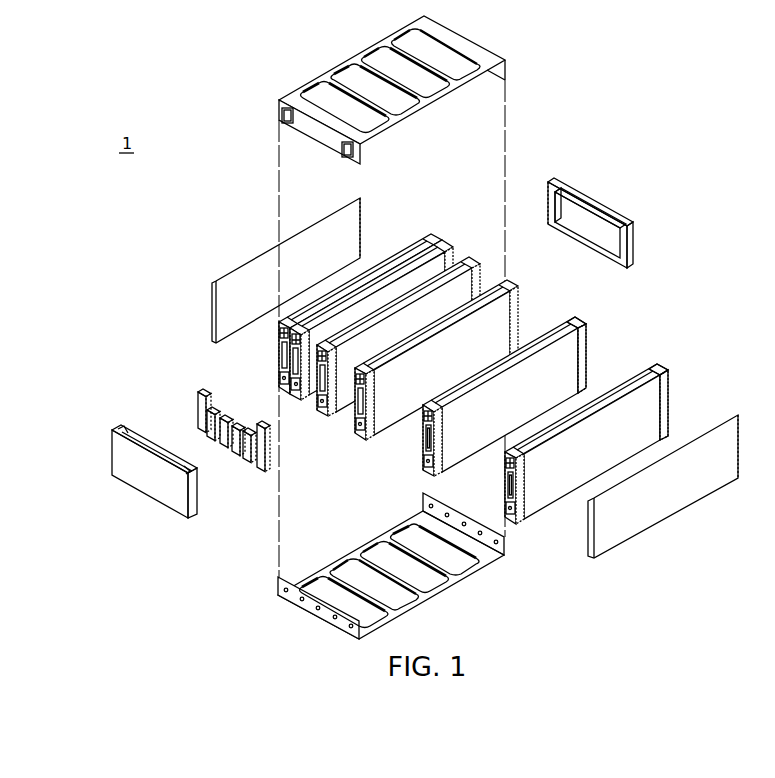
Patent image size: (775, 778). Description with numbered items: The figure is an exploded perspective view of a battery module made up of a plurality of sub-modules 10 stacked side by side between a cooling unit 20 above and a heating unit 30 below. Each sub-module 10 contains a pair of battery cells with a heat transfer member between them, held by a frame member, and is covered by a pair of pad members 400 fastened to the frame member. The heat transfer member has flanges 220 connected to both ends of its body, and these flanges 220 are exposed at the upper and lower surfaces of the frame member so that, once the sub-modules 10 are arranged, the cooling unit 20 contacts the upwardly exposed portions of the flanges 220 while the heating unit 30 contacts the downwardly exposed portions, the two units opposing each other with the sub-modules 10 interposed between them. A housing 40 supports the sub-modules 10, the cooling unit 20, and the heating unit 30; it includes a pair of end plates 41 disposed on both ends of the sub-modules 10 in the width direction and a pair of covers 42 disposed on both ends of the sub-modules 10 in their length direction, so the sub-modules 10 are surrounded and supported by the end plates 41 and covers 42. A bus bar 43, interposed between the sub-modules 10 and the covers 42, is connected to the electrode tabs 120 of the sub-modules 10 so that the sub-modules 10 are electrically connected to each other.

The sub-module 10 is at (497, 404).
The cooling unit 20 is at (292, 80).
The heating unit 30 is at (463, 587).
The housing 40 is at (402, 358).
The end plate 41 is at (111, 455).
The cover 42 is at (211, 316).
The bus bar 43 is at (197, 400).
The electrode tab 120 is at (423, 437).
The flange 220 is at (556, 326).
The pad member 400 is at (534, 372).